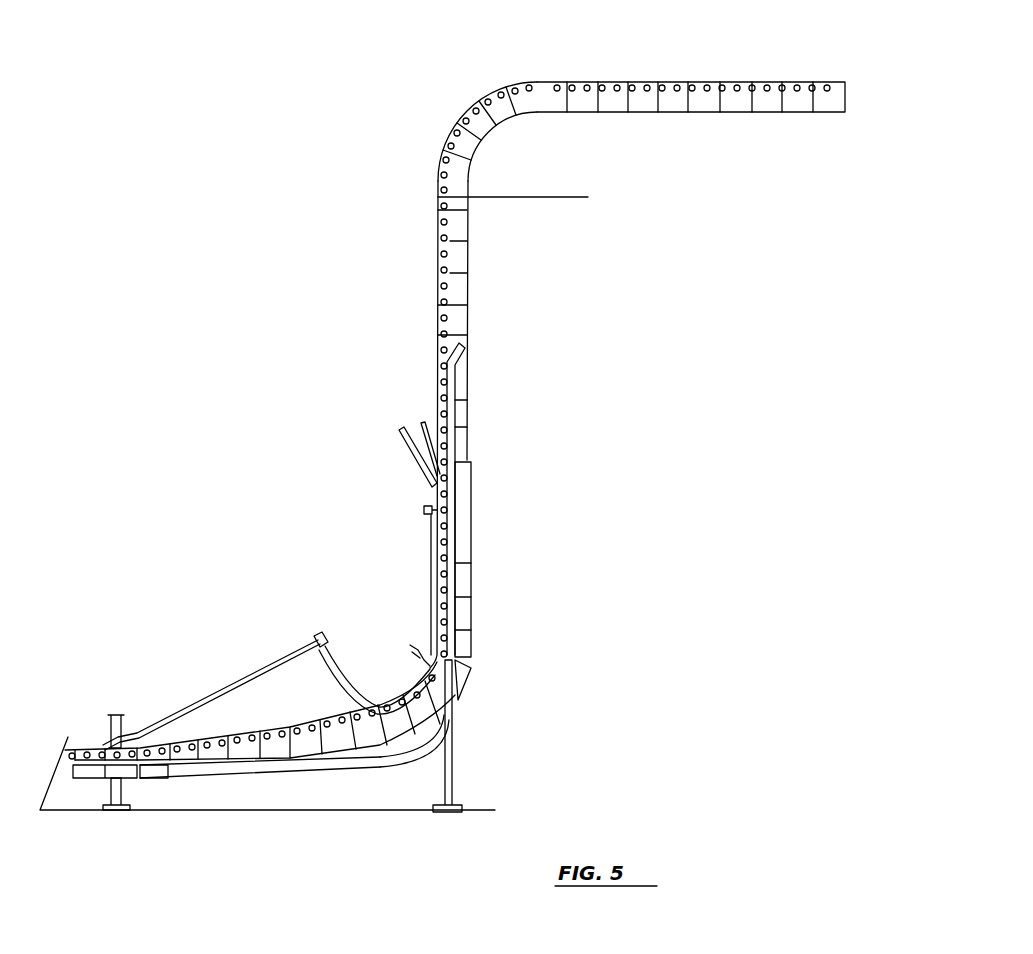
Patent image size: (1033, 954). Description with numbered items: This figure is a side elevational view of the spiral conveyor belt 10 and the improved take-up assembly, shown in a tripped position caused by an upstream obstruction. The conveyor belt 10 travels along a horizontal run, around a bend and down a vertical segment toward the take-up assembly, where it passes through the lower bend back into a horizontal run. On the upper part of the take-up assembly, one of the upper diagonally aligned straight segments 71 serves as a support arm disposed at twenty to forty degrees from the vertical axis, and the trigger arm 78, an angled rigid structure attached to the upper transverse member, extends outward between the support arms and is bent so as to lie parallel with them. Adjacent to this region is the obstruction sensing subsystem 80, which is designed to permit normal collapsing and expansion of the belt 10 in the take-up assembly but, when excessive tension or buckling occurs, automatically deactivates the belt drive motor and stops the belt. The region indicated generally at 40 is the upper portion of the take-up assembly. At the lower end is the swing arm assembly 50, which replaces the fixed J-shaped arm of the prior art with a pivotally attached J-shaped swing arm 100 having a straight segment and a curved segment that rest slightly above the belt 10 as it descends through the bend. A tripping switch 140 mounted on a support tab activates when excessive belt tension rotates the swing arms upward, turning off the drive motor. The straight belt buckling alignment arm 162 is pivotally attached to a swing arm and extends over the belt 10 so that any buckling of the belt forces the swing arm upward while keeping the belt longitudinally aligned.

The conveyor belt 10 is at (588, 74).
The transfer assembly 40 is at (394, 462).
The upper diagonal aligned straight segment 71 is at (401, 433).
The trigger arm 78 is at (424, 426).
The obstruction sensing subsystem 80 is at (424, 508).
The swing arm assembly 50 is at (343, 618).
The J-shaped swing arm 100 is at (326, 656).
The tripping switch 140 is at (421, 648).
The belt buckling alignment arm 162 is at (235, 678).